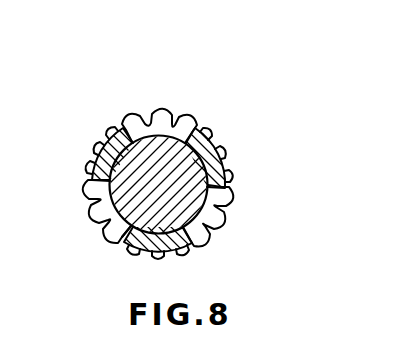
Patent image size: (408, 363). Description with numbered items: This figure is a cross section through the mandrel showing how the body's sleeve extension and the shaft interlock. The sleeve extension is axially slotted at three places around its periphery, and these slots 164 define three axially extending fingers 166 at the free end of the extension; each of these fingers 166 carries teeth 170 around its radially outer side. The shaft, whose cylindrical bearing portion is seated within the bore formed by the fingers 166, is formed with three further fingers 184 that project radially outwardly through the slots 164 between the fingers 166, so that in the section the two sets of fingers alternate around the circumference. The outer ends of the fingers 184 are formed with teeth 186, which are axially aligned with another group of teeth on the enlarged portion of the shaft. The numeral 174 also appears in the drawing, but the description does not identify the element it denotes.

The slots 164 is at (171, 169).
The fingers 166 is at (171, 188).
The teeth 170 is at (91, 153).
The joint 174 is at (118, 228).
The fingers 184 is at (200, 157).
The teeth 186 is at (156, 104).